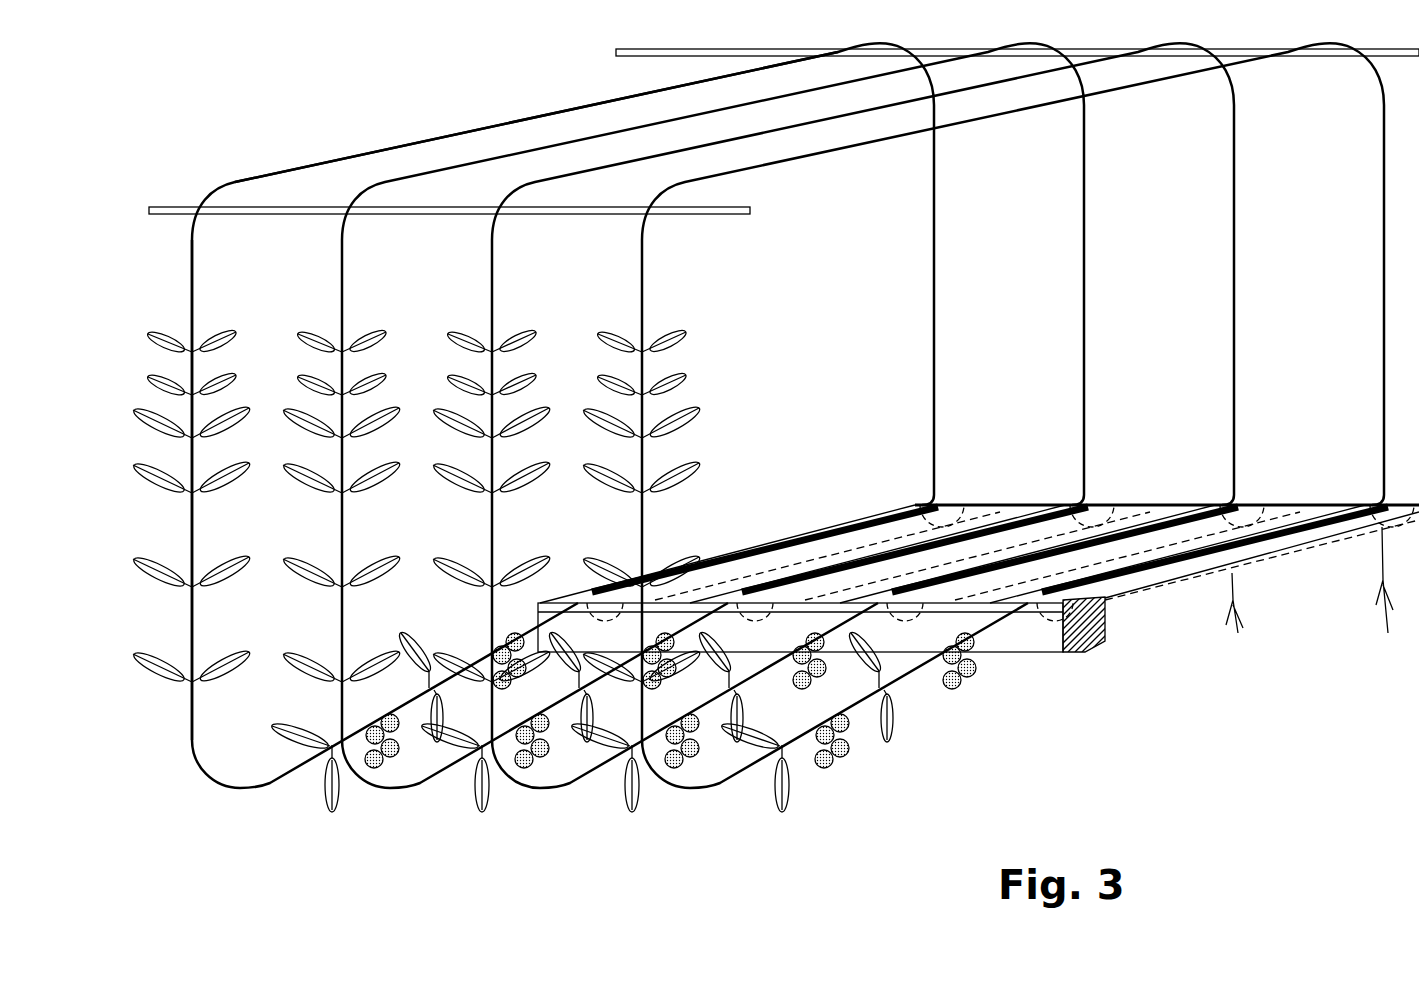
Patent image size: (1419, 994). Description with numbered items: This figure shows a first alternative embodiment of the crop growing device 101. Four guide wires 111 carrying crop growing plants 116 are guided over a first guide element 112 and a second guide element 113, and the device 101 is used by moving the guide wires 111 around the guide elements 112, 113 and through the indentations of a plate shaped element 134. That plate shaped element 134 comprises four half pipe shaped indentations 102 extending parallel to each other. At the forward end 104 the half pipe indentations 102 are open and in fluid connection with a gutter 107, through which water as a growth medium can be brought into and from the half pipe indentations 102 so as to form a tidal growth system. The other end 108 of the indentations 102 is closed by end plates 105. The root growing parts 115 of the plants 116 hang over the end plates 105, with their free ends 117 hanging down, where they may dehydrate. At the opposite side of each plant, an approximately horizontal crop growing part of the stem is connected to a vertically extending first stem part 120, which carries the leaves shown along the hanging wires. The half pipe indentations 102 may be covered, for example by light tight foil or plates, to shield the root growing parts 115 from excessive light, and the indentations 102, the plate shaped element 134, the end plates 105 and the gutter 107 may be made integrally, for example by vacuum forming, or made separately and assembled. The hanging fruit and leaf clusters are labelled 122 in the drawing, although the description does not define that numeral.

The device 101 is at (428, 813).
The half pipe shaped indentation 102 is at (853, 507).
The forward end 104 is at (574, 590).
The end plate 105 is at (1248, 497).
The gutter 107 is at (1085, 653).
The other end 108 is at (950, 497).
The guide wire 111 is at (457, 136).
The first guide element 112 is at (172, 207).
The second guide element 113 is at (953, 54).
The root growing part 115 is at (1290, 527).
The crop growing plant 116 is at (692, 395).
The free end 117 is at (1309, 600).
The first stem part 120 is at (190, 527).
The fruit and hanging leaves 122 is at (858, 700).
The plate shaped element 134 is at (1147, 504).